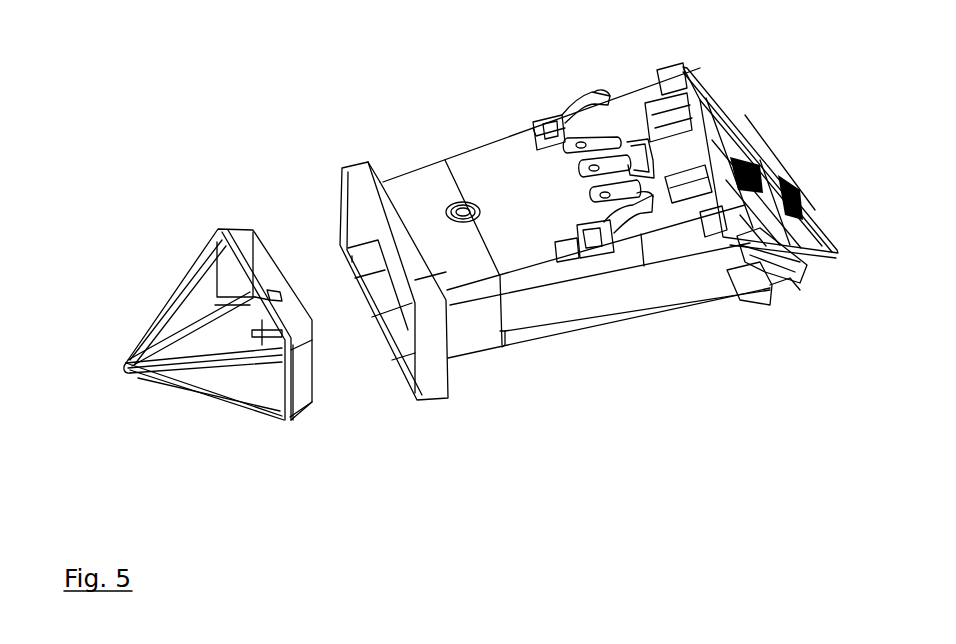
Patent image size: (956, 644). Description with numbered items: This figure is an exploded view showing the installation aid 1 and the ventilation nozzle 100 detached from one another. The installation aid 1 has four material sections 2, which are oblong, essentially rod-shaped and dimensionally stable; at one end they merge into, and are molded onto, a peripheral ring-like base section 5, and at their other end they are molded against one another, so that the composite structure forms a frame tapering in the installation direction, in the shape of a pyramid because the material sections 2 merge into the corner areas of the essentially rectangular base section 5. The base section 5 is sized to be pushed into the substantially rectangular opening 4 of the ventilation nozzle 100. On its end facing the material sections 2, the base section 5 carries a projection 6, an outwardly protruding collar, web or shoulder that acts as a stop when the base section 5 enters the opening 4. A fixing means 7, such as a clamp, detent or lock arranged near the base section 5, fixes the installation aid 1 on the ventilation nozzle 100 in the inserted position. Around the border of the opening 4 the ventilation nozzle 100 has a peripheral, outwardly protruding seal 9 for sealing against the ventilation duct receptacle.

The installation aid 1 is at (193, 236).
The material sections 2 is at (192, 313).
The opening 4 is at (358, 236).
The base section 5 is at (293, 330).
The projection 6 is at (232, 250).
The fixing means 7 is at (280, 294).
The seal 9 is at (366, 188).
The ventilation nozzle 100 is at (519, 180).